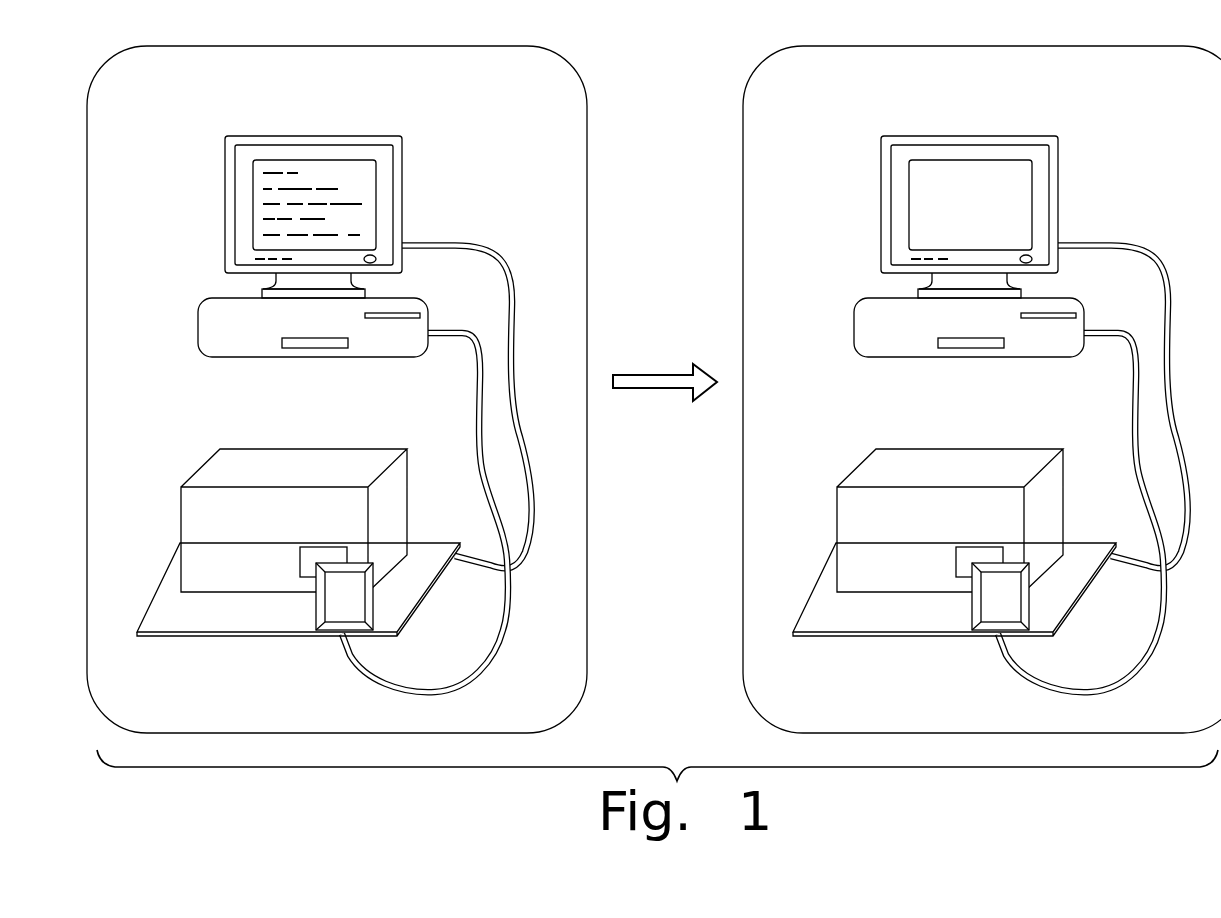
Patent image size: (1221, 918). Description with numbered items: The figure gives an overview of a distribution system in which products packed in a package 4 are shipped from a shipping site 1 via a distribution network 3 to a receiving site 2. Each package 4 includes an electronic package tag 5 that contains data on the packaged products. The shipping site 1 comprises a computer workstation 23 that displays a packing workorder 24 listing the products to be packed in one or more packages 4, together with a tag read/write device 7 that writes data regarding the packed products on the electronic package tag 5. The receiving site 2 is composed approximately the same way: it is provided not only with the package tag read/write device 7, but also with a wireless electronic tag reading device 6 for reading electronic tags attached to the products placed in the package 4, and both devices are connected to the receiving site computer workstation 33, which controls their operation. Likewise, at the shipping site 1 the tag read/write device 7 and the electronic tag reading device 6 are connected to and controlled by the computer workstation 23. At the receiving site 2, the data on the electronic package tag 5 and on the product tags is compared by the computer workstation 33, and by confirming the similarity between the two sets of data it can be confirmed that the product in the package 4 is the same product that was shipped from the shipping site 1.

The shipping site 1 is at (606, 148).
The receiving site 2 is at (726, 150).
The distribution network 3 is at (658, 367).
The package 4 is at (337, 449).
The electronic package tag 5 is at (320, 547).
The electronic tag reading device 6 is at (417, 625).
The tag read/write device 7 is at (315, 610).
The computer workstation 23 is at (453, 136).
The packing workorder 24 is at (347, 186).
The computer workstation 33 is at (1108, 145).